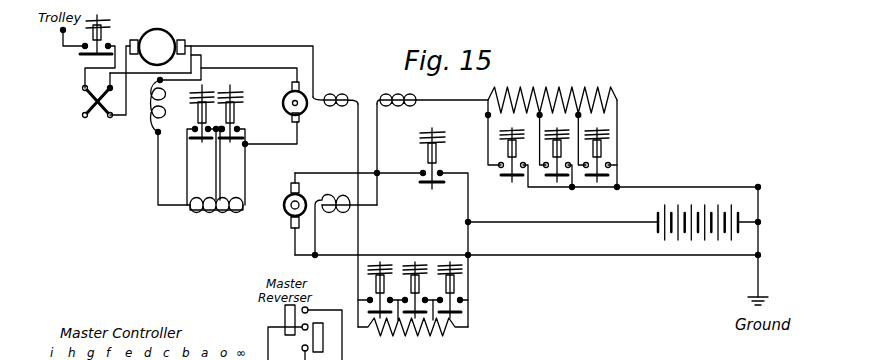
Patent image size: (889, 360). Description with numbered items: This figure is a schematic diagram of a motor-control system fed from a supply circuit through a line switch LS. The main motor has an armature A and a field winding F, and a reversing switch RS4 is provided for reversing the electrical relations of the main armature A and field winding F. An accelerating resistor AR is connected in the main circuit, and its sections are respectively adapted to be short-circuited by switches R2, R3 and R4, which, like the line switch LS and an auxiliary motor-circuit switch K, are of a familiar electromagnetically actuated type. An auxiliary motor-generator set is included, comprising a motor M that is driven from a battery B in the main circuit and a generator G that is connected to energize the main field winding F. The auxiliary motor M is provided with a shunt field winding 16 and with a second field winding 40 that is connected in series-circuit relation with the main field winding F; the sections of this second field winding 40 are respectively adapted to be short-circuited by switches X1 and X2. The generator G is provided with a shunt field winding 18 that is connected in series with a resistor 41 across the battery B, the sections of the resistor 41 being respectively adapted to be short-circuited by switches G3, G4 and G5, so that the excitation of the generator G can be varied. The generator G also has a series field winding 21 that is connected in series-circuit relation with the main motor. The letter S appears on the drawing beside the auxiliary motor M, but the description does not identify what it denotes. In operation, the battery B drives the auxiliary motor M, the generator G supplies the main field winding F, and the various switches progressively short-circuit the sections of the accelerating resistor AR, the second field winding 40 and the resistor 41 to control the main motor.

The line switch LS is at (101, 21).
The reversing switch RS4 is at (86, 100).
The armature A is at (157, 47).
The field winding F is at (165, 106).
The switch X1 is at (201, 125).
The switch X2 is at (229, 125).
The second field winding 40 is at (236, 216).
The generator G is at (303, 106).
The series field winding 21 is at (343, 95).
The shunt field winding 18 is at (405, 106).
The resistor 41 is at (545, 88).
The switch G3 is at (514, 183).
The switch G4 is at (558, 183).
The switch G5 is at (598, 183).
The battery B is at (690, 209).
The auxiliary motor-circuit switch K is at (434, 186).
The motor M is at (284, 213).
The motor armature S is at (303, 197).
The shunt field winding 16 is at (346, 225).
The switch R2 is at (385, 290).
The switch R3 is at (421, 290).
The switch R4 is at (455, 287).
The accelerating resistor AR is at (413, 339).